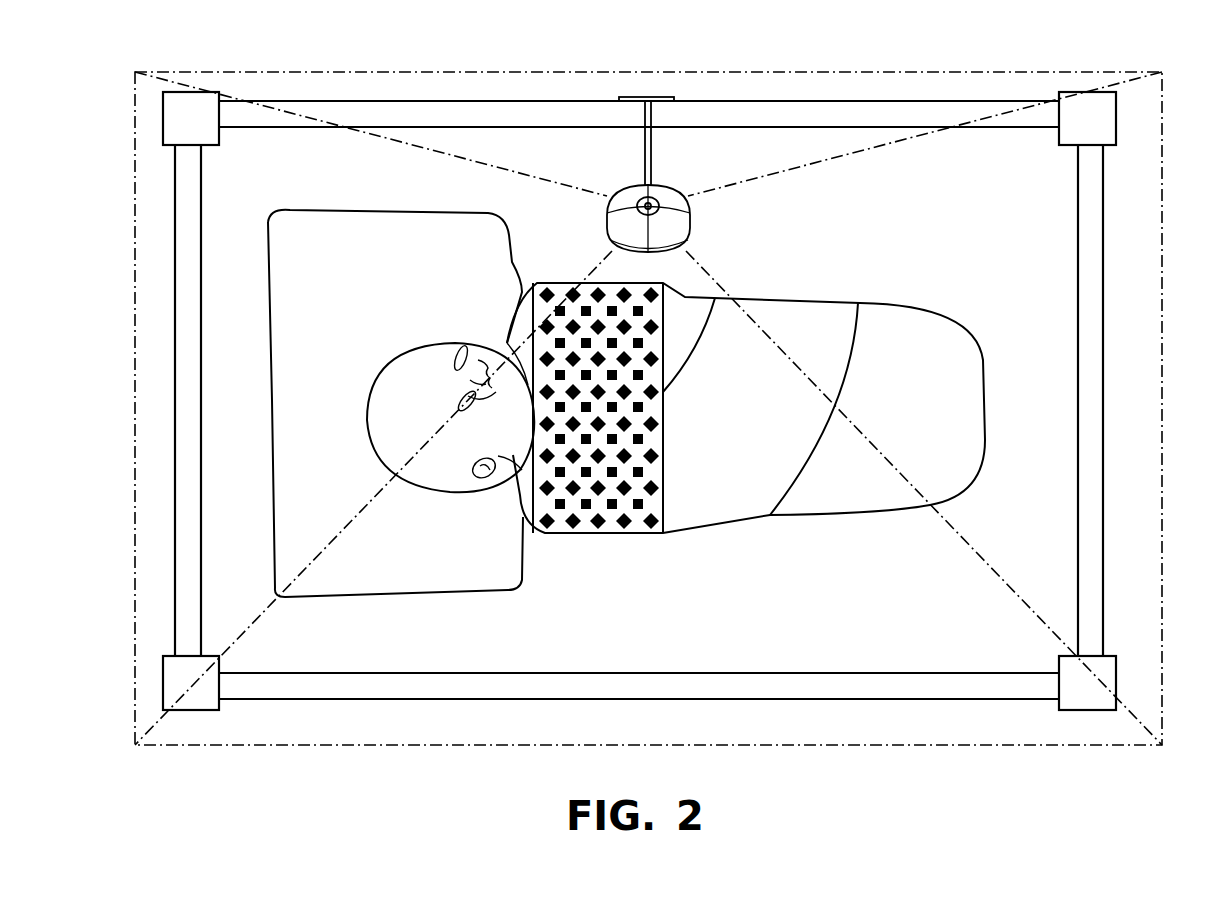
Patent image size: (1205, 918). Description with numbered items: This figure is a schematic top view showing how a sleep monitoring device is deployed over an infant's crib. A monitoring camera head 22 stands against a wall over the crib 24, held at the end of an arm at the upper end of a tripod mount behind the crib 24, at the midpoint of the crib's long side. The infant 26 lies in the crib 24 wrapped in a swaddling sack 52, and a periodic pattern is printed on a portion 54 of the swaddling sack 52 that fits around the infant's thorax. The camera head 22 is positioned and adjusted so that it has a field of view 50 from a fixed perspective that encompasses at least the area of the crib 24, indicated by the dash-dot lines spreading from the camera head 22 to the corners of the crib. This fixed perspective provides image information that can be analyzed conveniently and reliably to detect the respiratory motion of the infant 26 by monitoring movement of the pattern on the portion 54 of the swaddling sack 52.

The monitoring camera head 22 is at (690, 222).
The crib 24 is at (846, 110).
The infant 26 is at (400, 462).
The field of view 50 is at (133, 303).
The swaddling sack 52 is at (817, 515).
The portion of the swaddling sack 54 is at (570, 518).